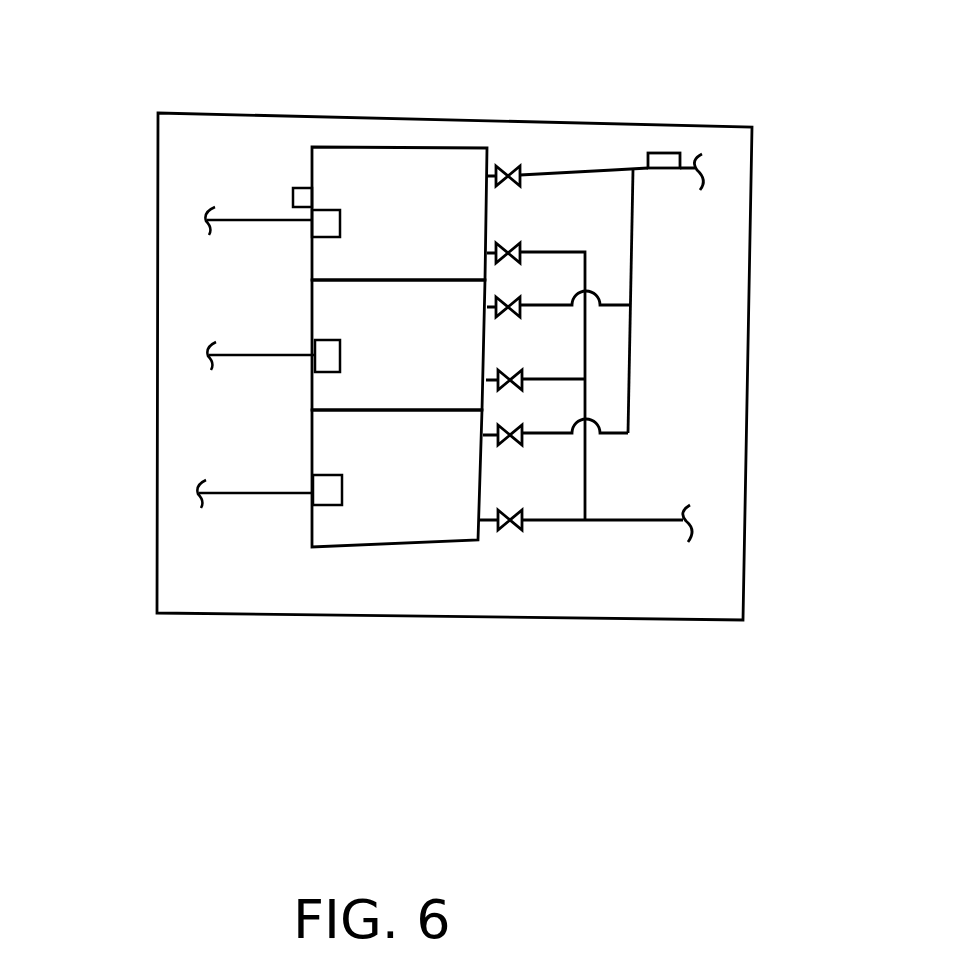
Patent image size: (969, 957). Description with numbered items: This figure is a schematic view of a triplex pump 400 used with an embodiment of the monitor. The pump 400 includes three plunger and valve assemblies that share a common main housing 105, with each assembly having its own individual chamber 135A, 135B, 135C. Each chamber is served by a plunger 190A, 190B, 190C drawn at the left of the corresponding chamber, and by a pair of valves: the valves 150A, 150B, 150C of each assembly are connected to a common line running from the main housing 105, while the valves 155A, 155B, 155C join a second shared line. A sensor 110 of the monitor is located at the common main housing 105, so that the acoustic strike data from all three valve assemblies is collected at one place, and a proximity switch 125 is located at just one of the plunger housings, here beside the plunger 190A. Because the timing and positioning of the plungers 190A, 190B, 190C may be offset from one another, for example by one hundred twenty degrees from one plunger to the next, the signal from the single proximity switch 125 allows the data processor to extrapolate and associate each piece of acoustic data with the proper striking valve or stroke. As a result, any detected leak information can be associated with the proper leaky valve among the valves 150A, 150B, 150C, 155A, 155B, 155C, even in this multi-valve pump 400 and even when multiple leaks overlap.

The pump 400 is at (571, 24).
The common main housing 105 is at (615, 170).
The sensor 110 is at (662, 158).
The proximity switch 125 is at (293, 196).
The chamber 135A is at (423, 206).
The chamber 135B is at (425, 331).
The chamber 135C is at (425, 466).
The valve 150A is at (509, 165).
The valve 150B is at (522, 300).
The valve 150C is at (523, 441).
The valve 155A is at (510, 243).
The valve 155B is at (523, 372).
The valve 155C is at (516, 532).
The plunger 190A is at (323, 206).
The plunger 190B is at (322, 340).
The plunger 190C is at (325, 478).